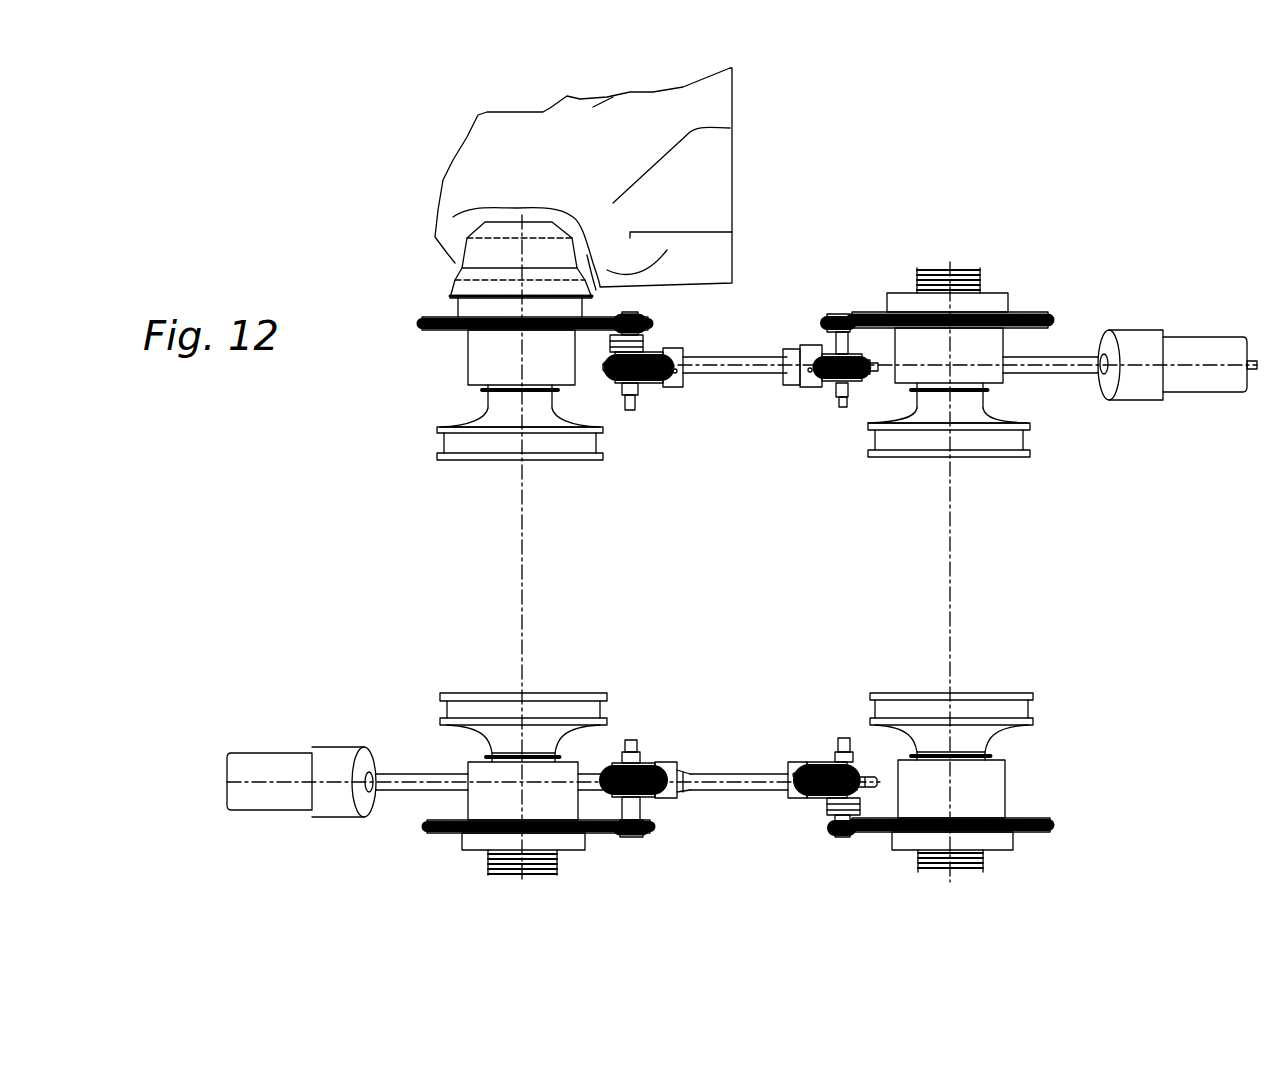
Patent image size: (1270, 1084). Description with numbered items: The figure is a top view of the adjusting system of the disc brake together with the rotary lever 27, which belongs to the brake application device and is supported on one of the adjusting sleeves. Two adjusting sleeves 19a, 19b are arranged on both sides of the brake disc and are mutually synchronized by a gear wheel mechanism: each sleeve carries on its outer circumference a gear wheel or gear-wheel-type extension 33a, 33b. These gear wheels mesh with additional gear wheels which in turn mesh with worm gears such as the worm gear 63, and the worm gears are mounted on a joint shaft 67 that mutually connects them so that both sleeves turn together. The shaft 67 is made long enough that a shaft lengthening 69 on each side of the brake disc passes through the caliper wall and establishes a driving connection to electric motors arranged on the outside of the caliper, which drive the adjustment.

The rotary lever 27 is at (715, 178).
The joint shaft 67 is at (735, 357).
The worm gear 63 is at (782, 377).
The shaft lengthening 69 is at (393, 768).
The adjusting sleeve 19a is at (493, 837).
The gear wheel 33a is at (598, 837).
The gear wheel 33b is at (1033, 815).
The adjusting sleeve 19b is at (1000, 843).